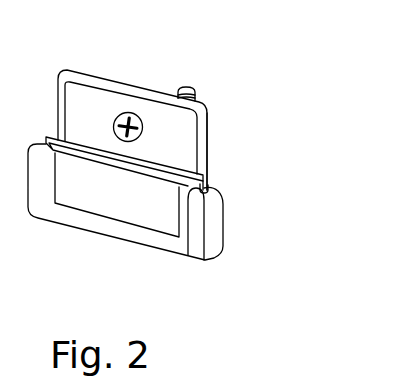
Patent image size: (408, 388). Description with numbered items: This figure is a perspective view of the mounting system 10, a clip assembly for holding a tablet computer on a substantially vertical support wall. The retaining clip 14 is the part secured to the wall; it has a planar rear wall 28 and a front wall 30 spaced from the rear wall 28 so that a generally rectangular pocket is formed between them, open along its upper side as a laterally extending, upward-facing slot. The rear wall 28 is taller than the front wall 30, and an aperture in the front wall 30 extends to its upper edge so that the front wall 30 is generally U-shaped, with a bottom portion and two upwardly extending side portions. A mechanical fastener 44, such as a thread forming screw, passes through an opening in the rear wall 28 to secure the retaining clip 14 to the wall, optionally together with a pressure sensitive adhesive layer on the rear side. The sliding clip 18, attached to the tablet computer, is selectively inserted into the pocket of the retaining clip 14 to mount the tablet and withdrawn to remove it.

The mounting system 10 is at (312, 93).
The retaining clip 14 is at (110, 78).
The sliding clip 18 is at (170, 163).
The rear wall 28 is at (210, 128).
The front wall 30 is at (130, 233).
The mechanical fastener 44 is at (184, 86).